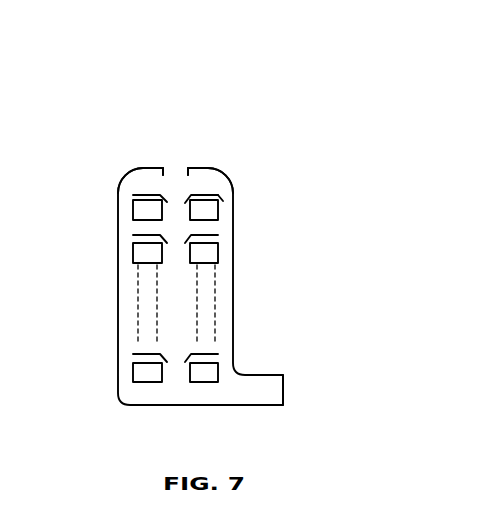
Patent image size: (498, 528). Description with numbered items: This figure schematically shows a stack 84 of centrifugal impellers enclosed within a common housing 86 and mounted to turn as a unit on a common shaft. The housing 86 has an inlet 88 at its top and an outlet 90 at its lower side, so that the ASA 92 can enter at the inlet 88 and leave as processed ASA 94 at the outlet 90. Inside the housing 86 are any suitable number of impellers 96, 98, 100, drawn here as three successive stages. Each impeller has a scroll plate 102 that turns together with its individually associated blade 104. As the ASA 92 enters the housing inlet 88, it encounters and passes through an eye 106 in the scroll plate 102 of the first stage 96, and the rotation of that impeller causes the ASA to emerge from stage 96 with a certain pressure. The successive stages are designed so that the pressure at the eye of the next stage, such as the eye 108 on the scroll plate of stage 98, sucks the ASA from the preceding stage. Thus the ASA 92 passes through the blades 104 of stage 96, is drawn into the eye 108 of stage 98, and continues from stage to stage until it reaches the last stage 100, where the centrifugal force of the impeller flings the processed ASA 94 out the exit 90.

The stack of centrifugal impellers 84 is at (201, 168).
The common housing 86 is at (233, 315).
The inlet 88 is at (177, 170).
The outlet 90 is at (283, 390).
The ASA 92 is at (169, 160).
The processed ASA 94 is at (313, 388).
The impeller 96 is at (232, 196).
The impeller 98 is at (230, 248).
The impeller 100 is at (236, 352).
The scroll plate 102 is at (135, 192).
The blade 104 is at (135, 212).
The eye 106 is at (150, 178).
The eye 108 is at (176, 251).